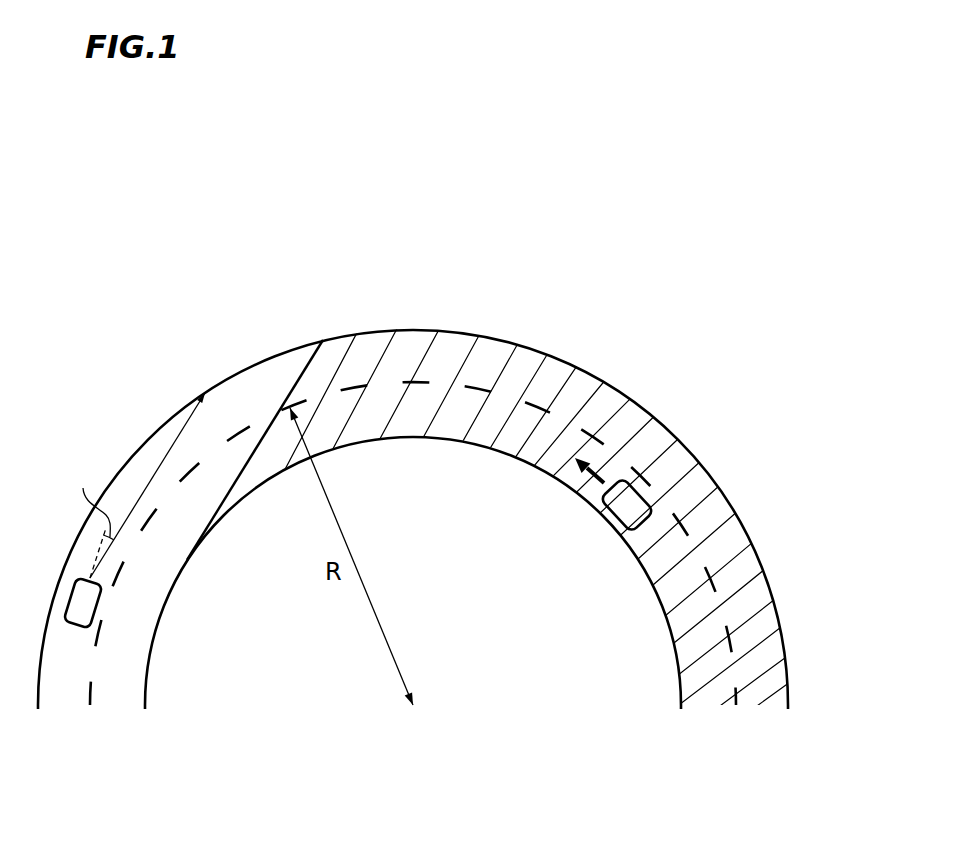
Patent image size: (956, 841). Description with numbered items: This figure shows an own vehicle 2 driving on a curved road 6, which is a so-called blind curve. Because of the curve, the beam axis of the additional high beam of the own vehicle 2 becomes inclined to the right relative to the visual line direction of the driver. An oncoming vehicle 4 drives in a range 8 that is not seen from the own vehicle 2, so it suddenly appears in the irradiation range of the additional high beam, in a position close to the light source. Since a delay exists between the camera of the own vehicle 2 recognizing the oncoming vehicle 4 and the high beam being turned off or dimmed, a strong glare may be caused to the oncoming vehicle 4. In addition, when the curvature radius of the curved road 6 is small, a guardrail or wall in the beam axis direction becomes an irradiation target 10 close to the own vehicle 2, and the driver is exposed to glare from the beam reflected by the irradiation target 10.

The own vehicle 2 is at (82, 602).
The oncoming vehicle 4 is at (627, 507).
The curved road 6 is at (118, 694).
The range 8 is at (578, 387).
The irradiation target 10 is at (205, 375).